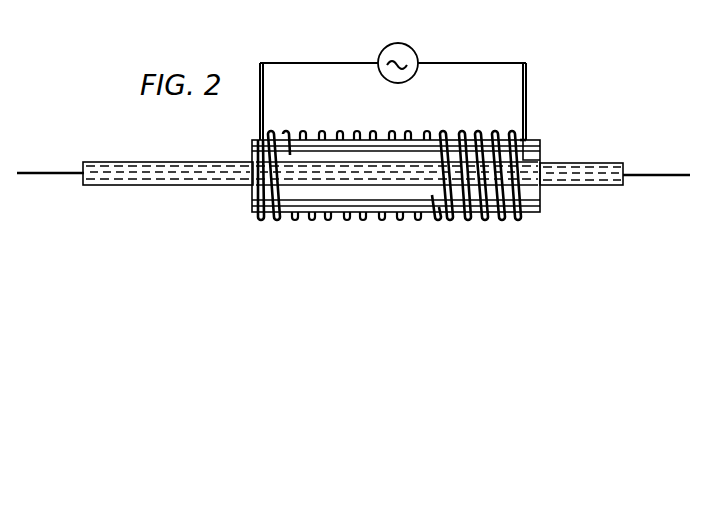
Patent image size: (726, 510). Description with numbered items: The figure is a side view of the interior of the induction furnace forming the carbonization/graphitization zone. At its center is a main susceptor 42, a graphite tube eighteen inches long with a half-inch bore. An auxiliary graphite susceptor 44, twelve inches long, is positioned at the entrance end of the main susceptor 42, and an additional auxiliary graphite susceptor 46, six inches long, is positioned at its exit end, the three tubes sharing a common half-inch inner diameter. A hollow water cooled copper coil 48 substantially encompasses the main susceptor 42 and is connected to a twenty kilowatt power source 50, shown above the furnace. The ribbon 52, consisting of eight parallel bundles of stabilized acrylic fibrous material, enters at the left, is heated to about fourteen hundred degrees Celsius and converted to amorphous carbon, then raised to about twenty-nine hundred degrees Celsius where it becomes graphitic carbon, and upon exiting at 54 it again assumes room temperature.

The main susceptor 42 is at (540, 196).
The auxiliary graphite susceptor 44 is at (155, 161).
The additional auxiliary graphite susceptor 46 is at (607, 163).
The hollow water cooled copper coil 48 is at (532, 160).
The power source 50 is at (386, 46).
The ribbon 52 is at (47, 171).
The exit 54 is at (685, 178).